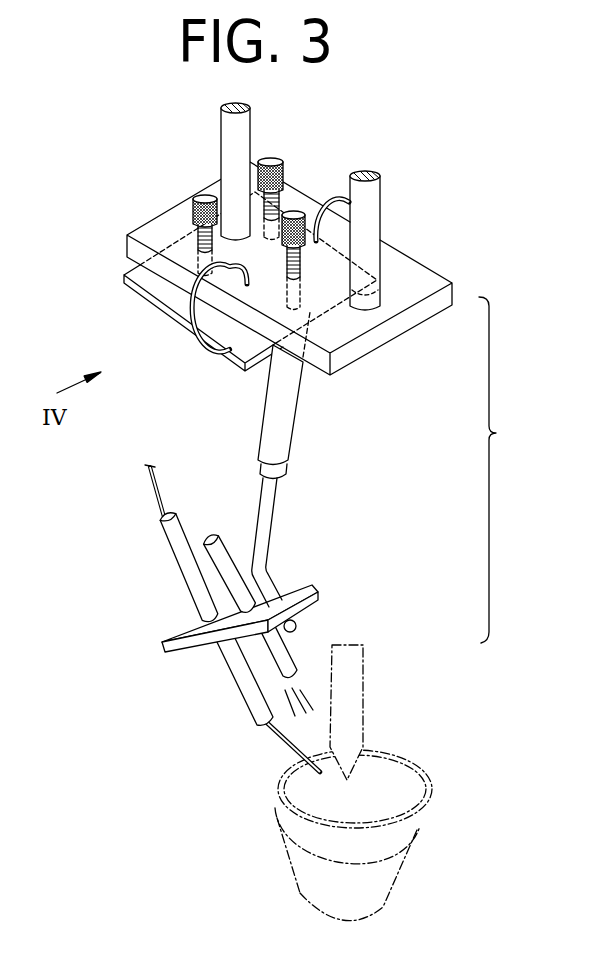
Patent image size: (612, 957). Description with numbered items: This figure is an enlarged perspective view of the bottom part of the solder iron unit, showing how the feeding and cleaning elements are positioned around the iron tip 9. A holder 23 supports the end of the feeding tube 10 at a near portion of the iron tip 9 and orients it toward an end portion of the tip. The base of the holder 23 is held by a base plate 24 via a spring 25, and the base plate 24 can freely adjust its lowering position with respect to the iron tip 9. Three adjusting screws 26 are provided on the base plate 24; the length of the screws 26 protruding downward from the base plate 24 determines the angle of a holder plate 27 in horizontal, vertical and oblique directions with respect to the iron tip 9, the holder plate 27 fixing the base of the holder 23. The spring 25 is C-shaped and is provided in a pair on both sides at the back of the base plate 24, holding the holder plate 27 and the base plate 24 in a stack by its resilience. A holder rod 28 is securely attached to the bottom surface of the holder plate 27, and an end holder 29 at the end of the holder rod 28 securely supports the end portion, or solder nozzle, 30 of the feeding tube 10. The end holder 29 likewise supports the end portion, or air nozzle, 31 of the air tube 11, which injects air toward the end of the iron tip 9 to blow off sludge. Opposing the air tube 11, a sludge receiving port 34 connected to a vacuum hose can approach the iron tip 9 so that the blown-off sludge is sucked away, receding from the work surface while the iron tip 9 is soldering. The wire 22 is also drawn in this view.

The iron tip 9 is at (362, 718).
The feeding tube 10 is at (192, 577).
The air tube 11 is at (222, 545).
The wire 22 is at (280, 748).
The holder 23 is at (503, 470).
The base plate 24 is at (402, 270).
The spring 25 is at (338, 197).
The screws 26 is at (203, 196).
The holder plate 27 is at (150, 288).
The holder rod 28 is at (288, 430).
The end holder 29 is at (317, 592).
The end portion (solder nozzle) 30 is at (252, 705).
The end portion (air nozzle) 31 is at (278, 660).
The sludge receiving port 34 is at (412, 830).